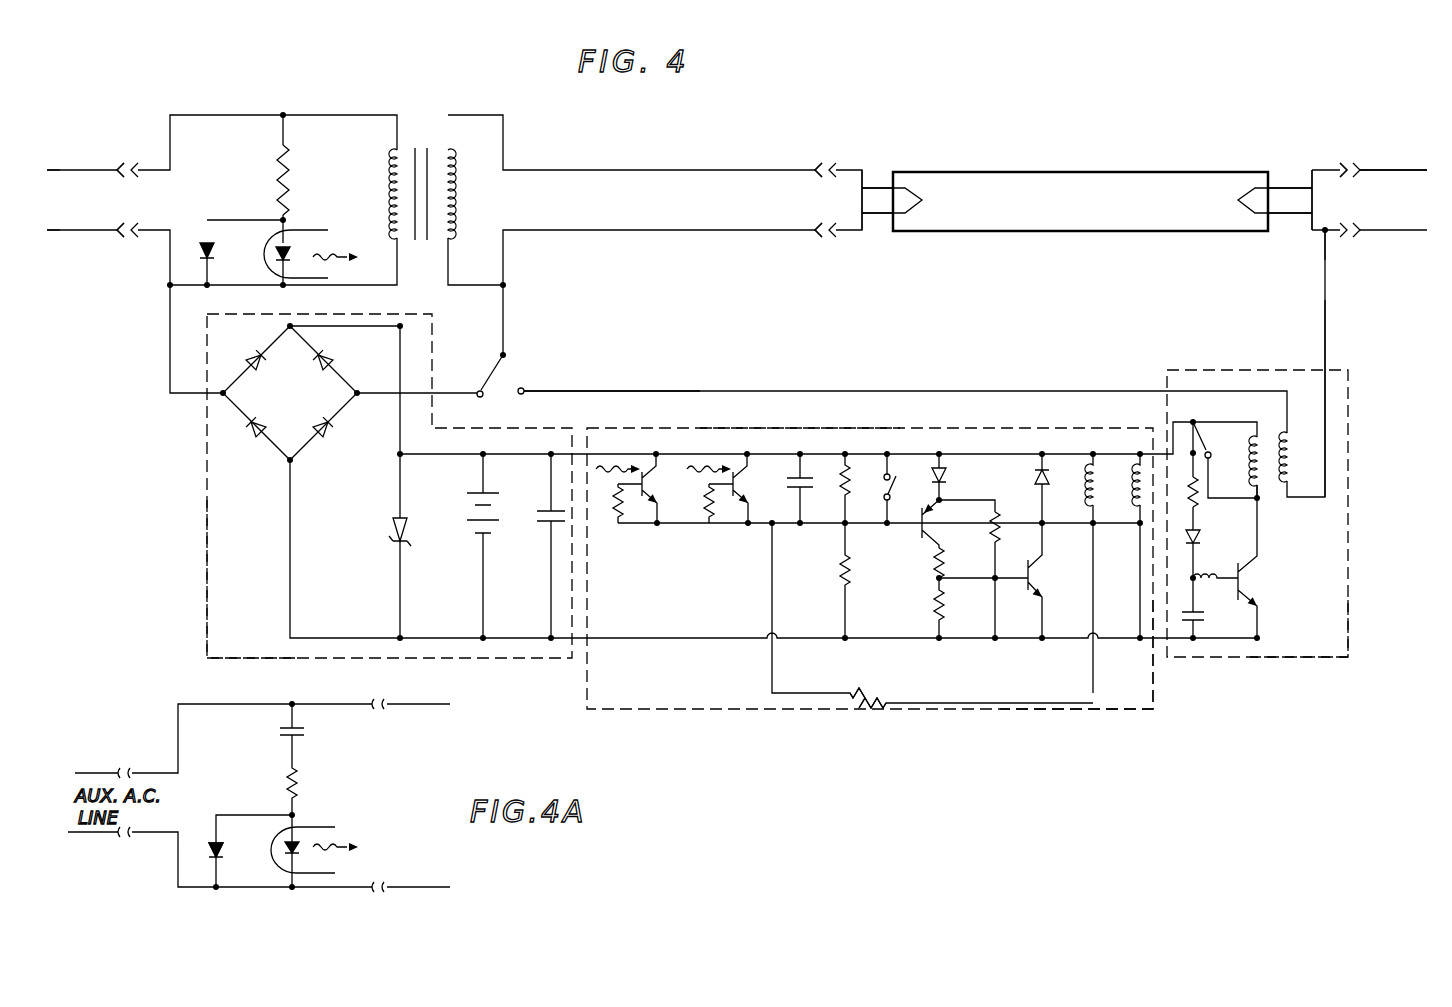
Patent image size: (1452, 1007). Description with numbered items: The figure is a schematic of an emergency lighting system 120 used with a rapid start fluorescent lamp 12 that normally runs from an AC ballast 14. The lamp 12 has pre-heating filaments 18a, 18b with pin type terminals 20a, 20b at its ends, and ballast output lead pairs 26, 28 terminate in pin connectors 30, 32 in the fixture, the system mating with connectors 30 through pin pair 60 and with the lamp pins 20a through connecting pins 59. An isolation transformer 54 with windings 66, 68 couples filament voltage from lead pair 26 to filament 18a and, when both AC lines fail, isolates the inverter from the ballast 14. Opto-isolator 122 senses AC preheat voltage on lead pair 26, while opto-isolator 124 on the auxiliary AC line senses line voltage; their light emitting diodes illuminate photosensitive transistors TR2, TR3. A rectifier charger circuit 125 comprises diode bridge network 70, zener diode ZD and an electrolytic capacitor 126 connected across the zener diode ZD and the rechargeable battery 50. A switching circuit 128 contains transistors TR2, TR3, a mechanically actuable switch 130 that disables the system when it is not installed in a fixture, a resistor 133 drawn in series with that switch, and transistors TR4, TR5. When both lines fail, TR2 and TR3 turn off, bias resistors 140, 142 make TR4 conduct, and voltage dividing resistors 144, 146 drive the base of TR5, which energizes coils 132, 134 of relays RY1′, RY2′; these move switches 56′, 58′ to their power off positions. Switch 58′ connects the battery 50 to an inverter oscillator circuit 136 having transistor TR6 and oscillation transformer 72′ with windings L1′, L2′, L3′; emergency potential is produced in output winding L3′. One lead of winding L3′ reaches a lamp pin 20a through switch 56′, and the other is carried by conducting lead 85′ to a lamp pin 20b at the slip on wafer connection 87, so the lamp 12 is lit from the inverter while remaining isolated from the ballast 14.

In FIG. 4, the pre-heat fluorescent lamp 12 is at (1182, 176).
In FIG. 4, the AC ballast 14 is at (725, 291).
In FIG. 4, the pre-heating filament 18a is at (918, 205).
In FIG. 4, the pre-heating filament 18b is at (1240, 205).
In FIG. 4, the pin type terminals 20a is at (848, 190).
In FIG. 4, the pin type terminals 20b is at (1284, 193).
In FIG. 4, the ballast output lead pair 26 is at (70, 197).
In FIG. 4, the ballast output lead pair 28 is at (1400, 197).
In FIG. 4, the lamp connector pair 30 is at (122, 218).
In FIG. 4, the lamp connector pair 32 is at (1355, 218).
In FIG. 4, the rechargeable battery 50 is at (472, 518).
In FIG. 4, the isolation transformer 54 is at (425, 146).
In FIG. 4, the power off switch 56′ is at (525, 371).
In FIG. 4, the power off switch 58′ is at (1203, 430).
In FIG. 4, the connecting pins 59 is at (812, 172).
In FIG. 4, the pin pair 60 is at (134, 226).
In FIG. 4, the transformer winding 66 is at (388, 183).
In FIG. 4, the transformer winding 68 is at (455, 190).
In FIG. 4, the diode bridge network 70 is at (237, 403).
In FIG. 4, the oscillation transformer 72′ is at (1275, 437).
In FIG. 4, the conducting lead 85′ is at (1322, 338).
In FIG. 4, the connection 87 is at (1322, 240).
In FIG. 4, the emergency lighting system 120 is at (897, 340).
In FIG. 4, the opto-isolator 122 is at (291, 266).
In FIG. 4A, the opto-isolator 124 is at (305, 845).
In FIG. 4, the rectifier charger circuit 125 is at (218, 560).
In FIG. 4, the electrolytic capacitor 126 is at (540, 520).
In FIG. 4, the switching circuit 128 is at (1110, 697).
In FIG. 4, the mechanically actuable switch 130 is at (898, 478).
In FIG. 4, the relay coil 132 is at (1092, 462).
In FIG. 4, the resistor 133 is at (846, 460).
In FIG. 4, the relay coil 134 is at (1137, 462).
In FIG. 4, the inverter oscillator circuit 136 is at (1300, 667).
In FIG. 4, the bias resistor 140 is at (845, 575).
In FIG. 4, the bias resistor 142 is at (893, 697).
In FIG. 4, the voltage dividing resistor 144 is at (938, 552).
In FIG. 4, the voltage dividing resistor 146 is at (938, 598).
In FIG. 4, the zener diode ZD is at (416, 551).
In FIG. 4, the electromagnetic relay RY1′ is at (519, 369).
In FIG. 4, the electromagnetic relay RY2′ is at (1215, 524).
In FIG. 4, the photosensitive transistor TR2 is at (633, 511).
In FIG. 4, the photosensitive transistor TR3 is at (719, 511).
In FIG. 4, the transistor TR4 is at (954, 535).
In FIG. 4, the transistor TR5 is at (1040, 584).
In FIG. 4, the transistor TR6 is at (1240, 577).
In FIG. 4, the transformer winding L1′ is at (1250, 466).
In FIG. 4, the transformer winding L2′ is at (1215, 561).
In FIG. 4, the output winding L3′ is at (1294, 444).